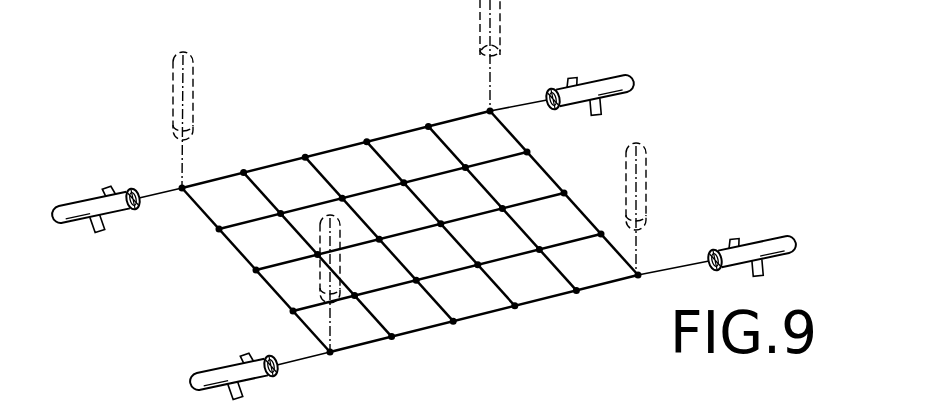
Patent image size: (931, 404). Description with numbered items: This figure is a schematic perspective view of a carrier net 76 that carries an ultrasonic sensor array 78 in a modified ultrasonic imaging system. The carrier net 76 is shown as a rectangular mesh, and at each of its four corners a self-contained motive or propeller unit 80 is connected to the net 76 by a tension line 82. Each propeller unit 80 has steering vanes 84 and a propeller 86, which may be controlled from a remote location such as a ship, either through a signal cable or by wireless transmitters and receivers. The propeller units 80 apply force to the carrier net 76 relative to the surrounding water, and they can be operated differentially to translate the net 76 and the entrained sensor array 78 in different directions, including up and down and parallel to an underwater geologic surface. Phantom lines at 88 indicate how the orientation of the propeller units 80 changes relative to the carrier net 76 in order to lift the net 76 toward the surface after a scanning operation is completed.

The carrier net 76 is at (417, 332).
The ultrasonic sensor array 78 is at (507, 333).
The propeller unit 80 is at (193, 370).
The tension line 82 is at (307, 353).
The steering vane 84 is at (115, 193).
The propeller 86 is at (273, 375).
The phantom-line orientation of propeller unit 88 is at (173, 106).